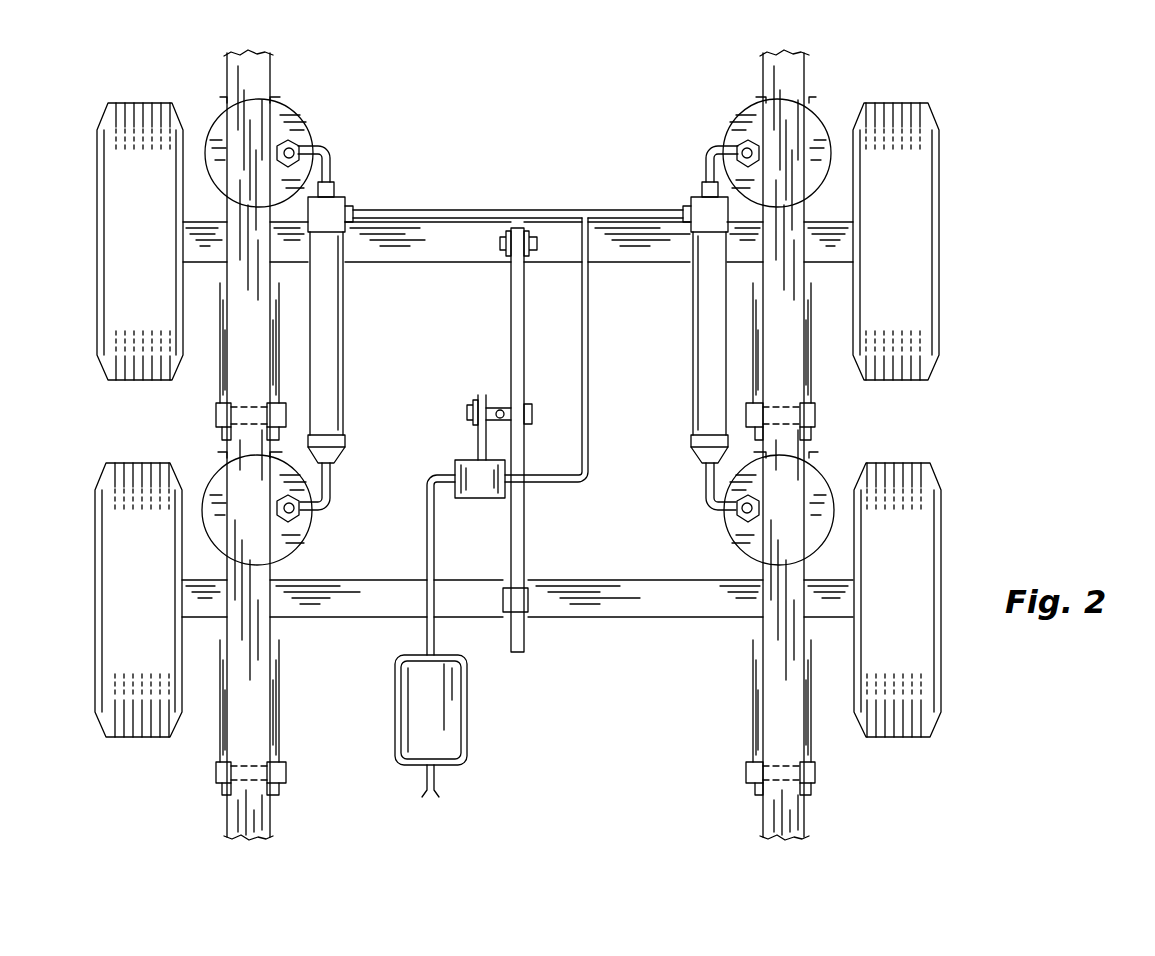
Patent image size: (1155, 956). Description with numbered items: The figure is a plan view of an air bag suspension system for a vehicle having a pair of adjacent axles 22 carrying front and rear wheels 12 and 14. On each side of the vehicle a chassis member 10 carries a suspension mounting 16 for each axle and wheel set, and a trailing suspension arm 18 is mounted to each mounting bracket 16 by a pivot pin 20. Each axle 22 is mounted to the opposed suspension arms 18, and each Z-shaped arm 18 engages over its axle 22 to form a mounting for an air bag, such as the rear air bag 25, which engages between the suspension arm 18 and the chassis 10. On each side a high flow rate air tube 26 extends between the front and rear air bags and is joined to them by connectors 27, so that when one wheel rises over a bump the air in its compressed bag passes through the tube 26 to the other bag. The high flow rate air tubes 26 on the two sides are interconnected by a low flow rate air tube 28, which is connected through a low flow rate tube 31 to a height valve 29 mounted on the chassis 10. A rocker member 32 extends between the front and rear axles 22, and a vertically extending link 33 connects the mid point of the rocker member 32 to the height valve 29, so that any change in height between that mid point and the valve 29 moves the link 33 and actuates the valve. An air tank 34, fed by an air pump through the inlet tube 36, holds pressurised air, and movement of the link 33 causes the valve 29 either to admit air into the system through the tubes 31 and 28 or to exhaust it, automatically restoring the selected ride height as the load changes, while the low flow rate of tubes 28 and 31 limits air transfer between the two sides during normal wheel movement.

The chassis member 10 is at (281, 77).
The front wheel 12 is at (123, 616).
The rear wheel 14 is at (121, 256).
The suspension mounting 16 is at (226, 403).
The trailing suspension arm 18 is at (223, 357).
The pivot pin 20 is at (250, 428).
The axle 22 is at (397, 258).
The rear air bag 25 is at (303, 120).
The high flow rate air tube 26 is at (332, 350).
The connector 27 is at (328, 157).
The low flow rate air tube 28 is at (527, 209).
The height valve 29 is at (481, 490).
The low flow rate tube 31 is at (589, 422).
The rocker member 32 is at (521, 293).
The link 33 is at (500, 407).
The air tank 34 is at (455, 707).
The inlet tube 36 is at (437, 779).